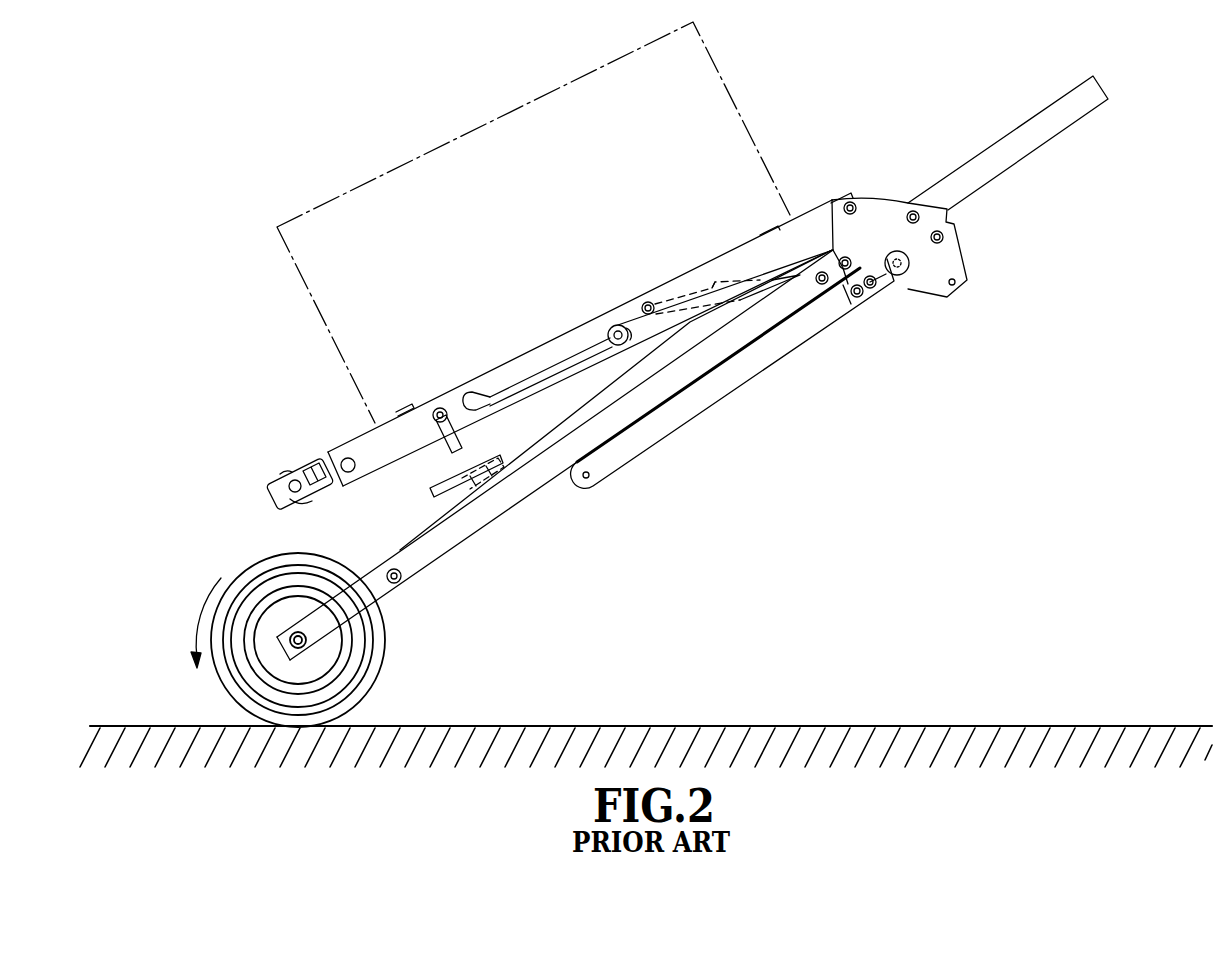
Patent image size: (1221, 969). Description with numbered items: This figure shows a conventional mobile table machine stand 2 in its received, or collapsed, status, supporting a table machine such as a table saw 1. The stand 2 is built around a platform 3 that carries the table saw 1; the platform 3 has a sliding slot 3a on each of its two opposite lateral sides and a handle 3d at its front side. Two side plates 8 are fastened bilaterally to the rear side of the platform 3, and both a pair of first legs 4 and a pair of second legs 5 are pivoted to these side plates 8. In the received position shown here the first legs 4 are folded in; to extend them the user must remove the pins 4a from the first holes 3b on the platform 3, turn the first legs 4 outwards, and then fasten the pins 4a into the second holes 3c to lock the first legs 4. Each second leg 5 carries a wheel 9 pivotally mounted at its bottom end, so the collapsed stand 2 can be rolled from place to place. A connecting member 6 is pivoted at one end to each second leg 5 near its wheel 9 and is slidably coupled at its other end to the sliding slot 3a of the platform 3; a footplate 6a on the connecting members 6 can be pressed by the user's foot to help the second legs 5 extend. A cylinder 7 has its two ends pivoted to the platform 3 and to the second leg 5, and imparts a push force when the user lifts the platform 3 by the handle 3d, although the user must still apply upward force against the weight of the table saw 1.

The table saw 1 is at (467, 130).
The mobile table machine stand 2 is at (838, 551).
The platform 3 is at (372, 427).
The sliding slot 3a is at (507, 392).
The first hole 3b is at (898, 272).
The second hole 3c is at (955, 284).
The handle 3d is at (268, 496).
The first leg 4 is at (712, 390).
The pin 4a is at (902, 268).
The second leg 5 is at (557, 467).
The connecting member 6 is at (580, 385).
The footplate 6a is at (434, 489).
The cylinder 7 is at (753, 292).
The side plate 8 is at (875, 222).
The wheel 9 is at (386, 641).